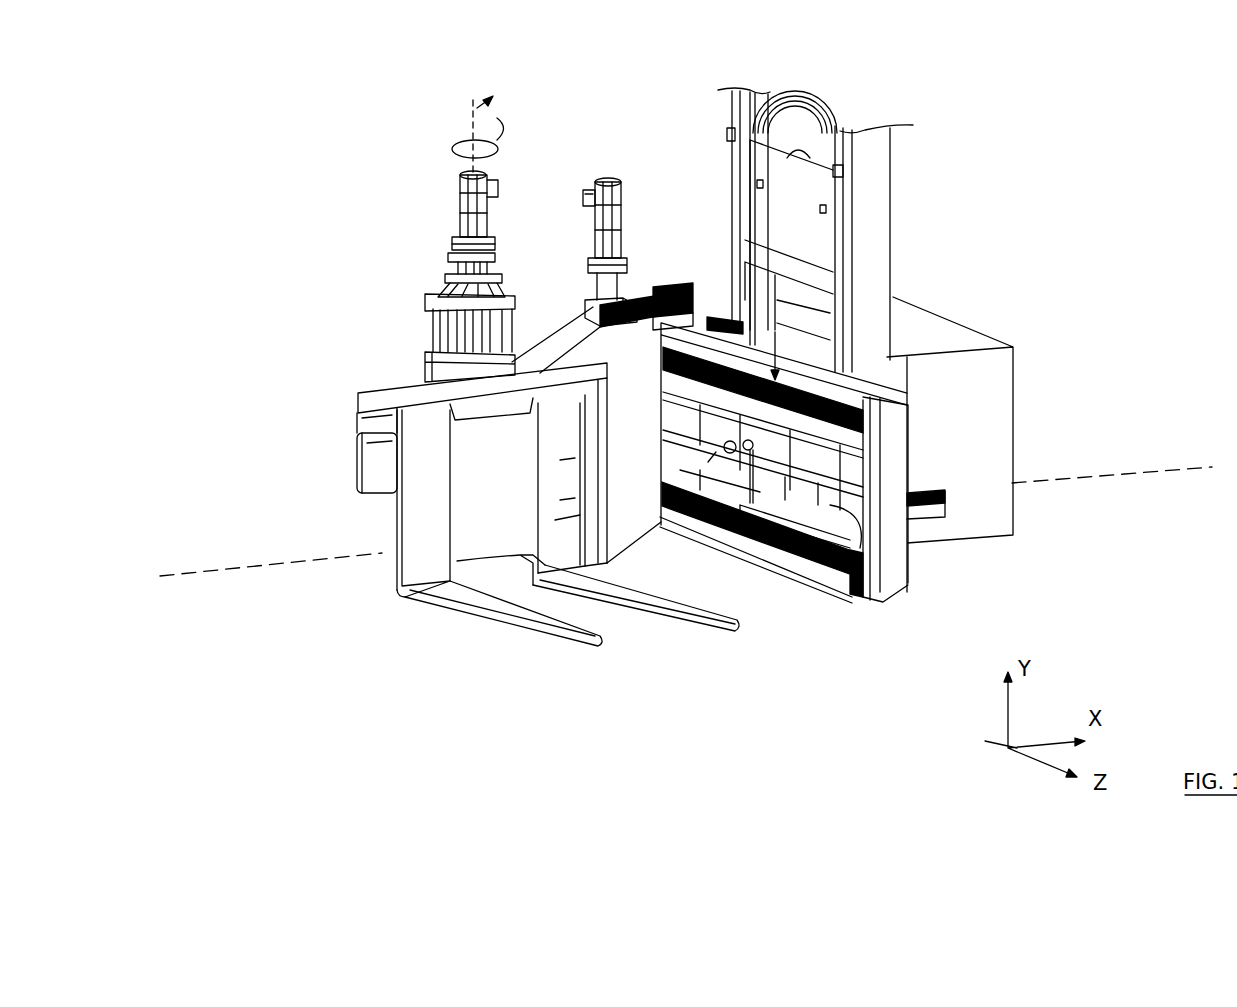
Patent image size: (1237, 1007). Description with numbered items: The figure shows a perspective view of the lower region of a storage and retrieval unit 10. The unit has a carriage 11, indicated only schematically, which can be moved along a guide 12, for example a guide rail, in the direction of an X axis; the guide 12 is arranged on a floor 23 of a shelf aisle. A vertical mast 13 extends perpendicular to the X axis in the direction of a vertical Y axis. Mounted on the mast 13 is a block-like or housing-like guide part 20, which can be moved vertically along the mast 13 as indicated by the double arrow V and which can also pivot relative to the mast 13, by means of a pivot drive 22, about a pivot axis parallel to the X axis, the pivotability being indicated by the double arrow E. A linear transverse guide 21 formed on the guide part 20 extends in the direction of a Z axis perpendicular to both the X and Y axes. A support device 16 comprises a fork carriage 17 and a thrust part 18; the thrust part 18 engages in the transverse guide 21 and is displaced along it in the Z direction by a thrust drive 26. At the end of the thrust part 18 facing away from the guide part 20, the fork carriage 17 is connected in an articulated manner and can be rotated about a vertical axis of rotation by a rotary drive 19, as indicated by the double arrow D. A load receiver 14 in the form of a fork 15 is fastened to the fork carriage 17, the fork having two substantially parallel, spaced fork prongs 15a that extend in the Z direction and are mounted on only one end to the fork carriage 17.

The storage and retrieval unit 10 is at (1015, 124).
The carriage 11 is at (963, 332).
The guide 12 is at (1128, 477).
The vertical mast 13 is at (882, 186).
The load receiver 14 is at (320, 632).
The fork 15 is at (455, 648).
The fork prongs 15a is at (512, 625).
The support device 16 is at (390, 163).
The fork carriage 17 is at (395, 388).
The thrust part 18 is at (646, 424).
The rotary drive 19 is at (490, 278).
The guide part 20 is at (895, 425).
The linear transverse guide 21 is at (712, 330).
The pivot drive 22 is at (932, 520).
The floor 23 is at (1082, 575).
The thrust drive 26 is at (618, 257).